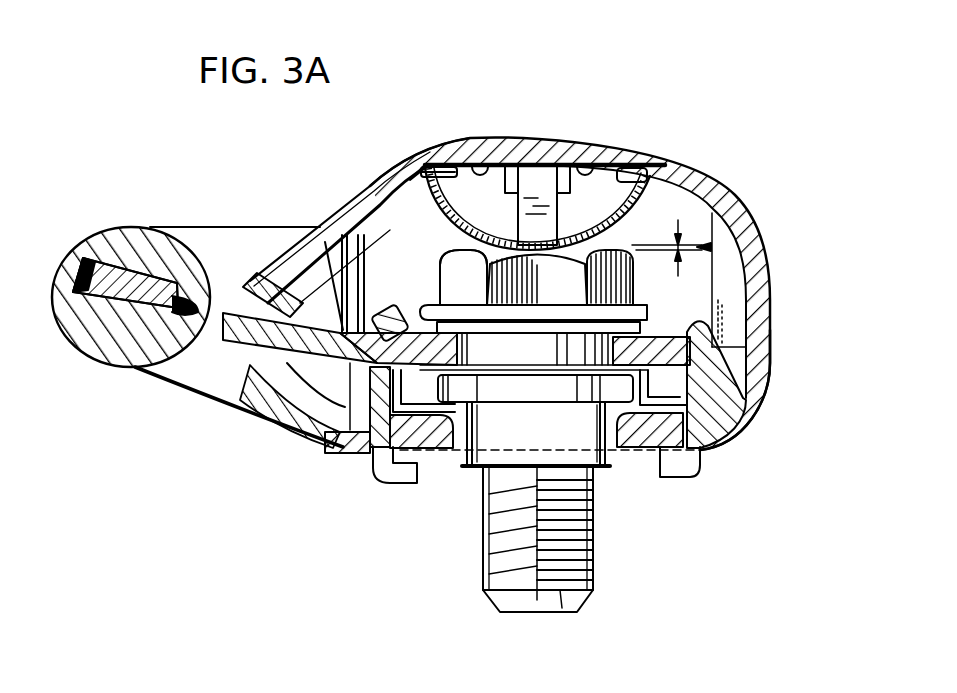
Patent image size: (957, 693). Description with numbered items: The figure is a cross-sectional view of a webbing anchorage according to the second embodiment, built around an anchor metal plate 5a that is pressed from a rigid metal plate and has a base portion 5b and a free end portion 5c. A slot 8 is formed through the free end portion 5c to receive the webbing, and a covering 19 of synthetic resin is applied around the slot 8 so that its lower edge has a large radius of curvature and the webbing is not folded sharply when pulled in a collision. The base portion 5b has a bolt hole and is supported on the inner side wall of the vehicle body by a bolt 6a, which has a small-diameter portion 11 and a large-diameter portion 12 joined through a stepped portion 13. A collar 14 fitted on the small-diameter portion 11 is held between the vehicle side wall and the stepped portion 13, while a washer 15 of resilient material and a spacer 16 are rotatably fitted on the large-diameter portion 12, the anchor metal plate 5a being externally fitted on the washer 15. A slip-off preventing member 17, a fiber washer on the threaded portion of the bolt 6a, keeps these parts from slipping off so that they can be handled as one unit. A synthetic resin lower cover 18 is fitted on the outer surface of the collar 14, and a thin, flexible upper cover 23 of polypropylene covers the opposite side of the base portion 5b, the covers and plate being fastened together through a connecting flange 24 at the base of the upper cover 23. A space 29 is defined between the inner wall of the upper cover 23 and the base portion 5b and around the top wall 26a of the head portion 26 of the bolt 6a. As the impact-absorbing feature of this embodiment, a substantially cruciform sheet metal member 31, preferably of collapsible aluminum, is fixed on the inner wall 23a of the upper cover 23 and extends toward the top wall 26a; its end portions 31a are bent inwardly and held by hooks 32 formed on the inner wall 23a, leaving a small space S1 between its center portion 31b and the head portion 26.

The covering 19 is at (78, 323).
The free end portion 5c is at (127, 296).
The slot 8 is at (198, 308).
The anchor metal plate 5a is at (288, 418).
The head portion 26 is at (417, 196).
The top wall 26a is at (620, 238).
The upper cover 23 is at (625, 158).
The inner wall 23a is at (470, 162).
The connecting flange 24 is at (770, 347).
The sheet metal member 31 is at (657, 204).
The end portions 31a is at (668, 178).
The center portion 31b is at (535, 162).
The hooks 32 is at (578, 162).
The small space S1 is at (711, 247).
The space 29 is at (683, 280).
The lower cover 18 is at (740, 428).
The large-diameter portion 12 is at (517, 347).
The washer 15 is at (468, 268).
The stepped portion 13 is at (458, 362).
The spacer 16 is at (440, 455).
The slip-off preventing member 17 is at (602, 470).
The collar 14 is at (500, 430).
The base portion 5b is at (660, 460).
The small-diameter portion 11 is at (480, 573).
The bolt 6a is at (553, 583).